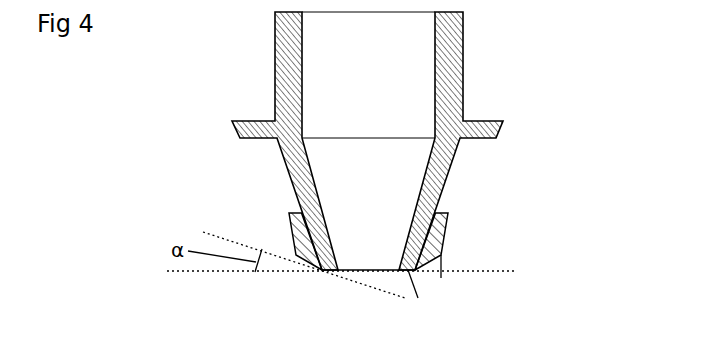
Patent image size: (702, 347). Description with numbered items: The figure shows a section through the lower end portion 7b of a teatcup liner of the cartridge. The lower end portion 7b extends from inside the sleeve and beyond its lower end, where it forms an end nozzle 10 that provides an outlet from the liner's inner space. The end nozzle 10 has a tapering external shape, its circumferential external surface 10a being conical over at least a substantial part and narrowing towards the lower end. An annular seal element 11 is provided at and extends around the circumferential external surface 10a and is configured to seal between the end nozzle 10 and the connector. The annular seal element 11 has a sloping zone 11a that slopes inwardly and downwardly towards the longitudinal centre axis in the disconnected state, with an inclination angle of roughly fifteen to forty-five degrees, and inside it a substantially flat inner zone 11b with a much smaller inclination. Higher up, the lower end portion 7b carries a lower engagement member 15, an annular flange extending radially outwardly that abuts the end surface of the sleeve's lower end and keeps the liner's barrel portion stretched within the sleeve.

The lower end portion 7b is at (466, 65).
The lower engagement member 15 is at (505, 119).
The end nozzle 10 is at (287, 169).
The circumferential external surface 10a is at (448, 178).
The annular seal element 11 is at (445, 229).
The sloping zone 11a is at (441, 278).
The inner zone 11b is at (418, 298).